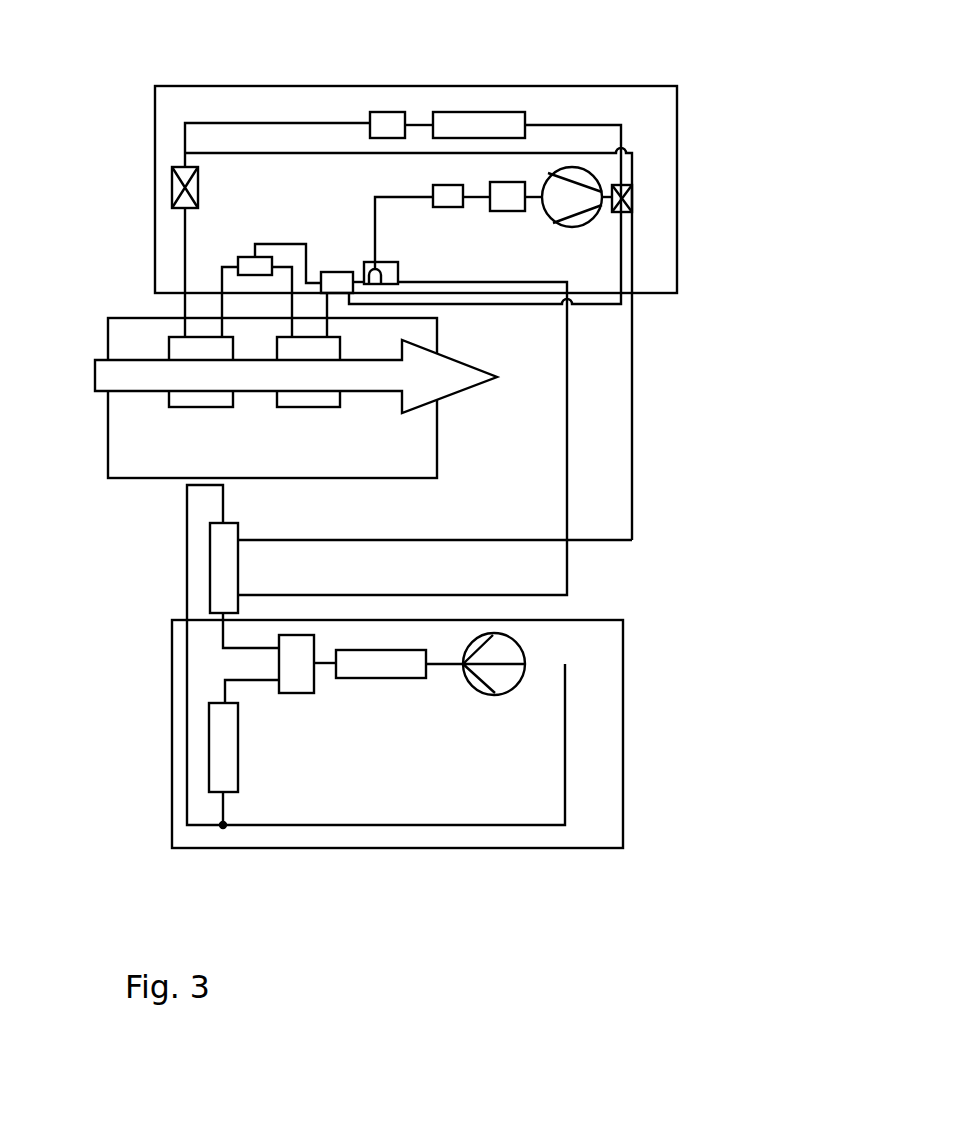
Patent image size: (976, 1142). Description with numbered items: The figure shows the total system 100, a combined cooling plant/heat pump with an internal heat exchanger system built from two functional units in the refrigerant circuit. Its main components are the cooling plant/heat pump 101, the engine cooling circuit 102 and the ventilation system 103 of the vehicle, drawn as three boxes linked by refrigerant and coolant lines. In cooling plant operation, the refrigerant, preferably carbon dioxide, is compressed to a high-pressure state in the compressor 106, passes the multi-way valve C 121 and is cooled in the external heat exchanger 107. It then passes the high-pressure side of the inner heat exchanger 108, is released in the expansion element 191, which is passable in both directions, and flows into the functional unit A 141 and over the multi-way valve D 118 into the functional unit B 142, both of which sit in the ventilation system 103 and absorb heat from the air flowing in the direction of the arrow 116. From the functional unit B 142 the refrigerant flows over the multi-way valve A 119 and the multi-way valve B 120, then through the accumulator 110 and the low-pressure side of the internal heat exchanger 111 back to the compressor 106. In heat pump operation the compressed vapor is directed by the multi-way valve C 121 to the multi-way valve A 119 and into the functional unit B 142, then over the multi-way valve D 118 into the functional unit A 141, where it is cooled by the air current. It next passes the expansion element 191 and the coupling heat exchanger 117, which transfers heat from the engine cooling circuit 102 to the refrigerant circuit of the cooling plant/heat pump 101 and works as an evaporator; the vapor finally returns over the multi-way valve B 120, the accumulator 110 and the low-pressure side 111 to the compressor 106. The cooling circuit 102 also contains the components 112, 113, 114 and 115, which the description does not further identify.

The total system 100 is at (763, 522).
The cooling plant/heat pump 101 is at (663, 94).
The cooling circuit 102 is at (628, 742).
The ventilation system 103 is at (408, 452).
The compressor 106 is at (587, 199).
The external heat exchanger 107 is at (465, 133).
The high-pressure side of the inner heat exchanger 108 is at (383, 128).
The accumulator 110 is at (448, 205).
The low-pressure side of the internal heat exchanger 111 is at (507, 210).
The coolant pump 112 is at (511, 673).
The heater 113 is at (383, 664).
The valve 114 is at (300, 668).
The heat exchanger 115 is at (228, 750).
The arrow 116 is at (455, 372).
The coupling heat exchanger 117 is at (227, 569).
The multi-way valve D 118 is at (247, 258).
The multi-way valve A 119 is at (340, 282).
The multi-way valve B 120 is at (391, 270).
The multi-way valve C 121 is at (628, 195).
The functional unit A 141 is at (201, 406).
The functional unit B 142 is at (308, 406).
The expansion element 191 is at (182, 187).